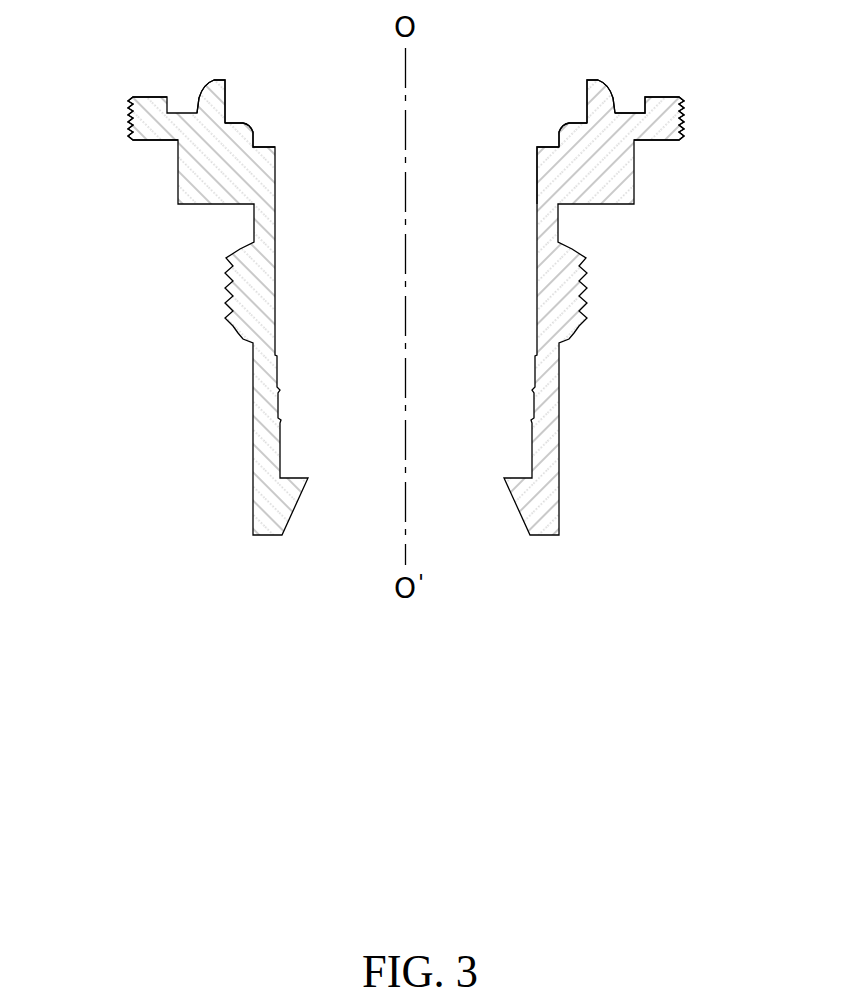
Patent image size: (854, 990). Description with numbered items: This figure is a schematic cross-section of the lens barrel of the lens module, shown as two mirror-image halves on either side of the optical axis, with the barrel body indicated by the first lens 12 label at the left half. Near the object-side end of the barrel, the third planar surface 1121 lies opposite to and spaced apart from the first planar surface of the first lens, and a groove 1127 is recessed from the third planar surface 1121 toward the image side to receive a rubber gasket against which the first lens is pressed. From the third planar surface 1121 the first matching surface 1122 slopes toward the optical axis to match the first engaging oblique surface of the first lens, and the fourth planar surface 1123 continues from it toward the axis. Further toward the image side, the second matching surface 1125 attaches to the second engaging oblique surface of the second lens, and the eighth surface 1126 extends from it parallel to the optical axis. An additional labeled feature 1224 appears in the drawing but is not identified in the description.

The first lens 12 is at (188, 285).
The third planar surface 1121 is at (147, 97).
The fourth planar surface 1123 is at (220, 80).
The step portion 1224 is at (243, 122).
The first matching surface 1122 is at (612, 95).
The groove 1127 is at (637, 105).
The second matching surface 1125 is at (558, 127).
The eighth surface 1126 is at (557, 138).